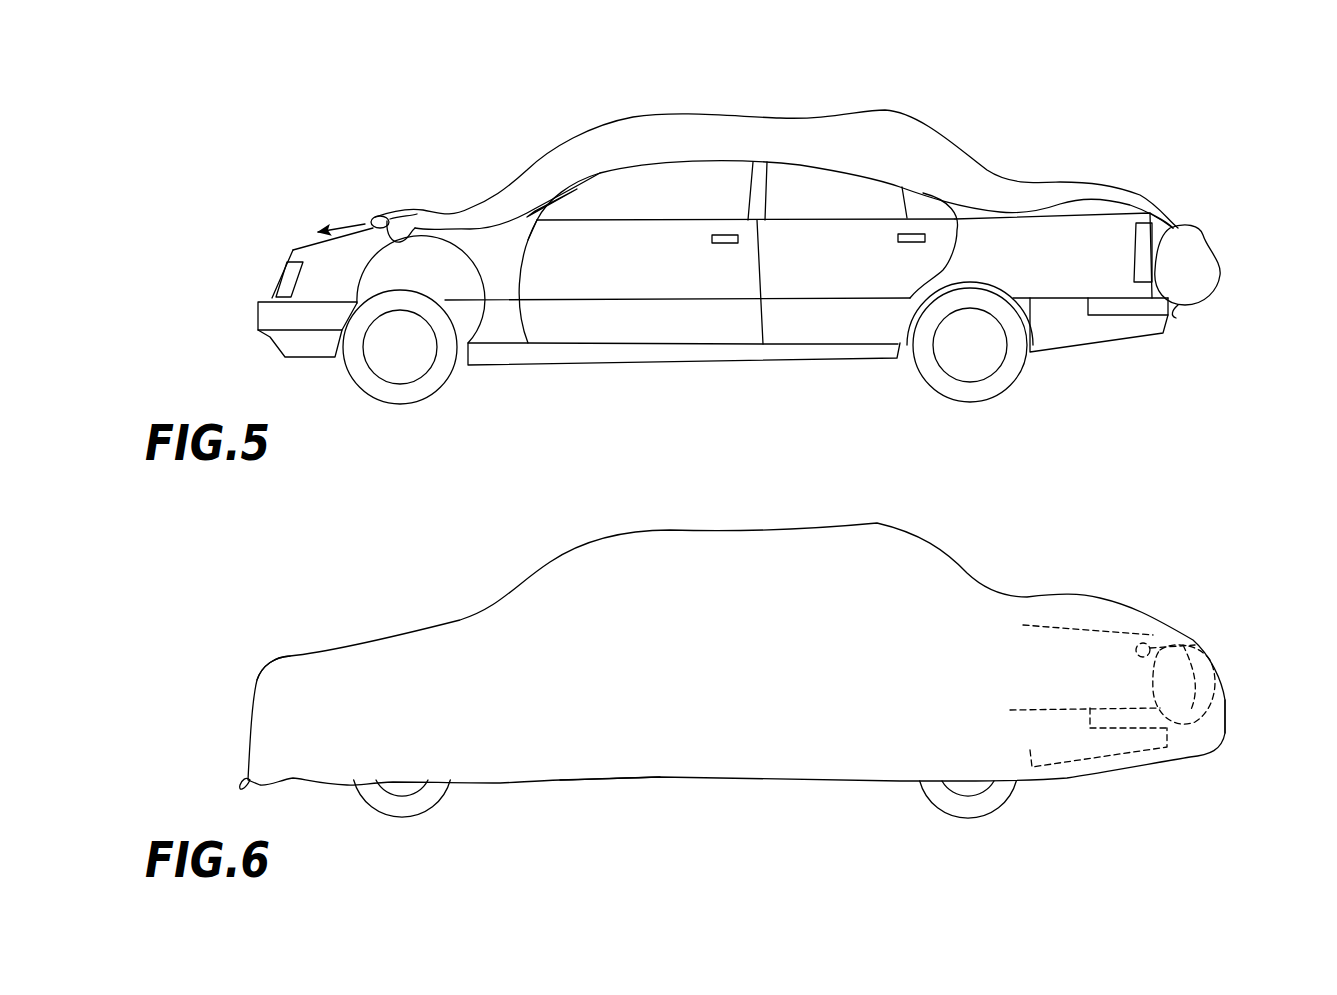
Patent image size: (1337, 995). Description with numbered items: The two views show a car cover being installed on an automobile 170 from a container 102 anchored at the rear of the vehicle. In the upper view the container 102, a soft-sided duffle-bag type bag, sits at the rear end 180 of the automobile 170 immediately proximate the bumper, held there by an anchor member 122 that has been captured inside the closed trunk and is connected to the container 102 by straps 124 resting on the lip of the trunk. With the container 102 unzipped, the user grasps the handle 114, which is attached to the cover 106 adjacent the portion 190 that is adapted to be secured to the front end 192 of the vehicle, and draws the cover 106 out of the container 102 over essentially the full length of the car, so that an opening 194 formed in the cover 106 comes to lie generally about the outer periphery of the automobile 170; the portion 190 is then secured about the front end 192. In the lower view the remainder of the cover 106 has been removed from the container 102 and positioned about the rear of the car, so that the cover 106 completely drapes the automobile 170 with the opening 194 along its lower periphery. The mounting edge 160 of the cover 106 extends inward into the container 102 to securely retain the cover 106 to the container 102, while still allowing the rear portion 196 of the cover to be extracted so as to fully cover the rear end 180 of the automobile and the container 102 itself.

In FIG. 5, the container 102 is at (1213, 253).
In FIG. 5, the cover 106 is at (700, 125).
In FIG. 6, the cover 106 is at (808, 528).
In FIG. 5, the handle 114 is at (380, 216).
In FIG. 6, the handle 114 is at (240, 775).
In FIG. 5, the anchor member 122 is at (1133, 233).
In FIG. 5, the straps 124 is at (1163, 210).
In FIG. 6, the mounting edge 160 is at (1193, 673).
In FIG. 5, the automobile 170 is at (841, 77).
In FIG. 6, the automobile 170 is at (489, 574).
In FIG. 5, the rear end 180 is at (1199, 327).
In FIG. 5, the portion of cover 190 is at (437, 212).
In FIG. 6, the portion of cover 190 is at (270, 665).
In FIG. 5, the front end 192 is at (240, 272).
In FIG. 6, the opening 194 is at (617, 783).
In FIG. 6, the rear portion 196 is at (1226, 685).